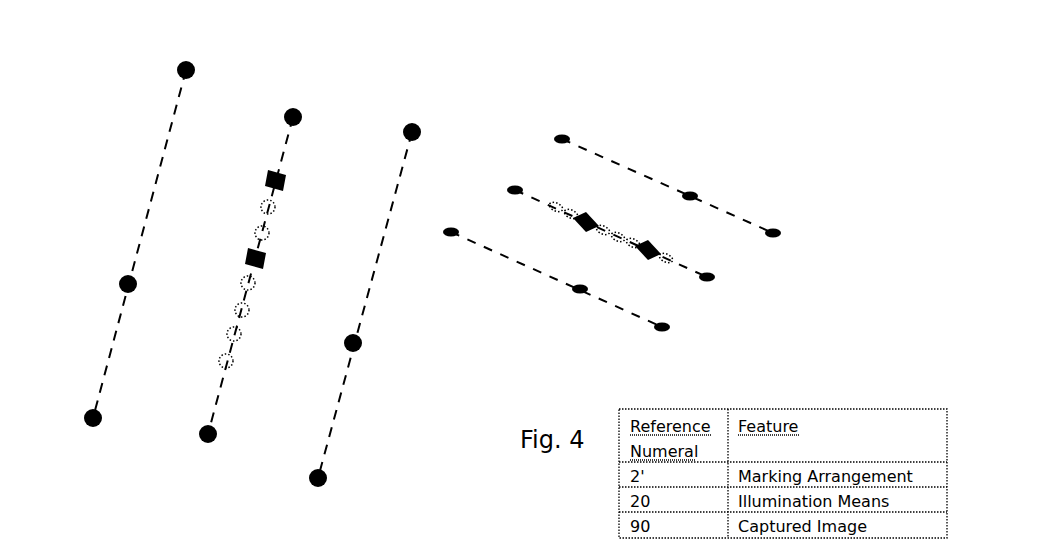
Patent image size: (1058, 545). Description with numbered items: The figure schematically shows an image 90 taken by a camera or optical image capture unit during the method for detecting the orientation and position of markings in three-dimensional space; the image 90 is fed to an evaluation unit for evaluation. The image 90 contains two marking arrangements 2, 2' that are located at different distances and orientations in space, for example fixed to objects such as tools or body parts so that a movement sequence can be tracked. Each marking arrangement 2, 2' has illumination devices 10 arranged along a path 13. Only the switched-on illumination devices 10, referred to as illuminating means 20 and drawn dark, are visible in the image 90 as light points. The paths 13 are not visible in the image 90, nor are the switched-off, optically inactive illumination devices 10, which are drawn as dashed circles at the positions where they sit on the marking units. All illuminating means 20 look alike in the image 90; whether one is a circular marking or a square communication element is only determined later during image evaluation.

The marking arrangement 2 is at (360, 52).
The marking arrangement 2' is at (617, 52).
The illumination device 10 is at (277, 207).
The path 13 is at (162, 160).
The illuminating means 20 is at (178, 68).
The image 90 is at (476, 383).